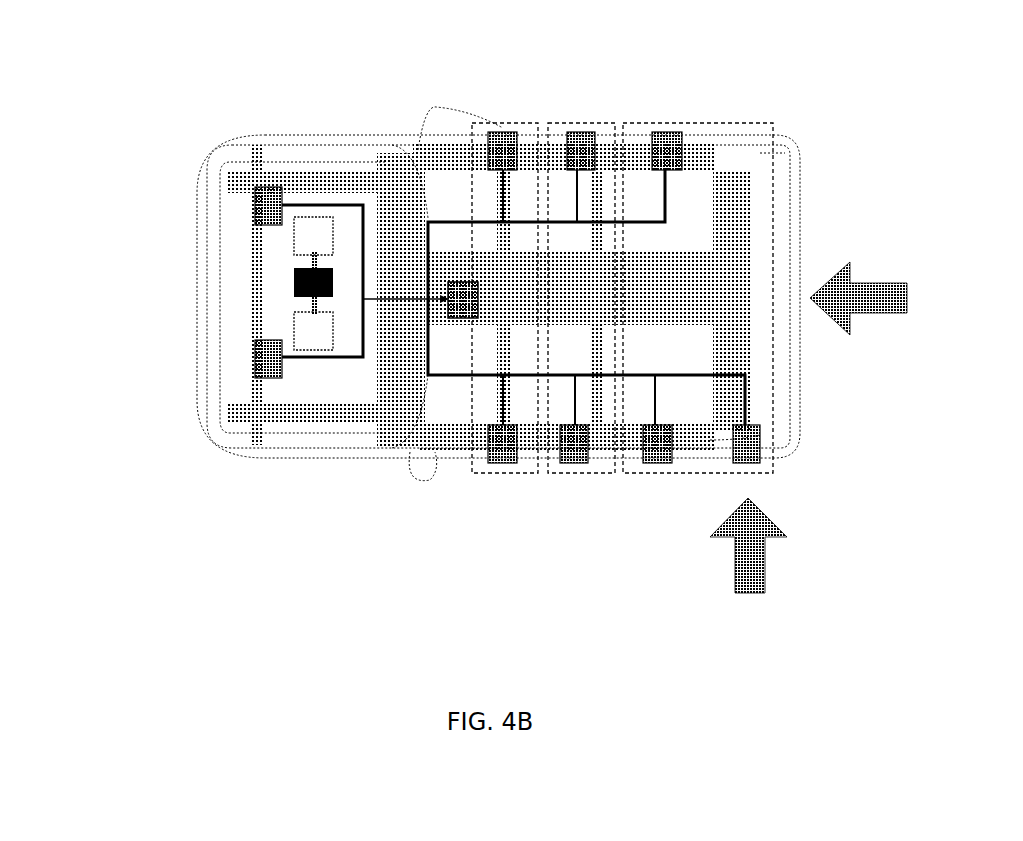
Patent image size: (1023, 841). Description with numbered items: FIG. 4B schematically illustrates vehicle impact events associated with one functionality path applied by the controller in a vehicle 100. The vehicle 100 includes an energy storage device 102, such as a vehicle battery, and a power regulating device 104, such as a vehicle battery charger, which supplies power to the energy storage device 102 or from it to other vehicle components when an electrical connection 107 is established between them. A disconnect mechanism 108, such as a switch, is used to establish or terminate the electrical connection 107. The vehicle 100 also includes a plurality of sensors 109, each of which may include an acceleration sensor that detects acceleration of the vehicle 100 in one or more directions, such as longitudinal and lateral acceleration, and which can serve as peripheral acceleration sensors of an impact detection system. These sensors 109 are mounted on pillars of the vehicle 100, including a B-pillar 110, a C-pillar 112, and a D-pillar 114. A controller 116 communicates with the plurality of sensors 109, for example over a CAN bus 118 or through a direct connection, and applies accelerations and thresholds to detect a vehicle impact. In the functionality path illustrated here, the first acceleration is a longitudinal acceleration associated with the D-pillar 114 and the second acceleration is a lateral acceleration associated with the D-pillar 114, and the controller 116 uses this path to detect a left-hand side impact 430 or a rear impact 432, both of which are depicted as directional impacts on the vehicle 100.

The vehicle 100 is at (152, 103).
The energy storage device 102 is at (292, 240).
The power regulating device 104 is at (290, 338).
The electrical connection 107 is at (293, 306).
The disconnect mechanism 108 is at (295, 256).
The sensors 109 is at (268, 187).
The B-pillar 110 is at (427, 218).
The C-pillar 112 is at (562, 123).
The D-pillar 114 is at (772, 123).
The controller 116 is at (462, 322).
The CAN bus 118 is at (708, 370).
The left-hand side impact 430 is at (750, 595).
The rear impact 432 is at (908, 298).